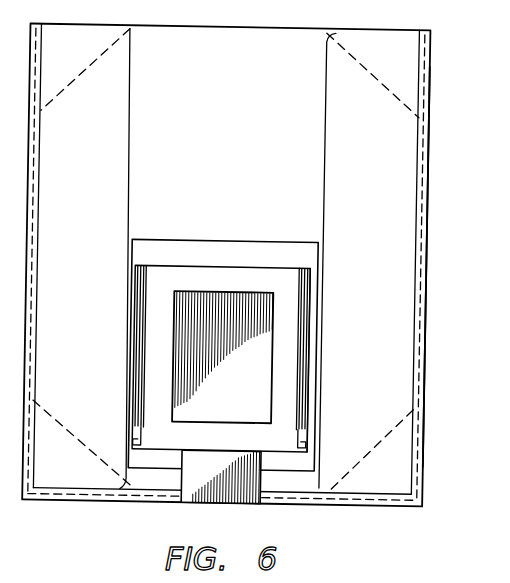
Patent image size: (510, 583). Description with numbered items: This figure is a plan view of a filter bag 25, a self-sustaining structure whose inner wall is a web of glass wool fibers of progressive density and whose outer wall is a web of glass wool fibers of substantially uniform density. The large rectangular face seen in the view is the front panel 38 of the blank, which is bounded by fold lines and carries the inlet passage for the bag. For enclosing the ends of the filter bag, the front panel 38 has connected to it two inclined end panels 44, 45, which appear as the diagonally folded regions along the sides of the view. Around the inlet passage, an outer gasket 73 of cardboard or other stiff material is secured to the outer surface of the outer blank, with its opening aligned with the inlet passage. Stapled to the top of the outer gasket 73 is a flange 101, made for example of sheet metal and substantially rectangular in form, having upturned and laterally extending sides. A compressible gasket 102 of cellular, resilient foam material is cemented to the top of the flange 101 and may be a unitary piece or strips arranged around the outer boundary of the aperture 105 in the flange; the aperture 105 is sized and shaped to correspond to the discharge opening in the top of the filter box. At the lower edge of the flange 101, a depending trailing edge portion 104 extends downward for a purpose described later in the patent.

The front panel 38 is at (252, 28).
The filter bag 25 is at (437, 375).
The inclined end panel 45 is at (132, 156).
The inclined end panel 44 is at (329, 123).
The outer gasket 73 is at (254, 248).
The compressible gasket 102 is at (296, 294).
The flange 101 is at (308, 335).
The aperture 105 is at (277, 353).
The depending trailing edge portion 104 is at (258, 498).